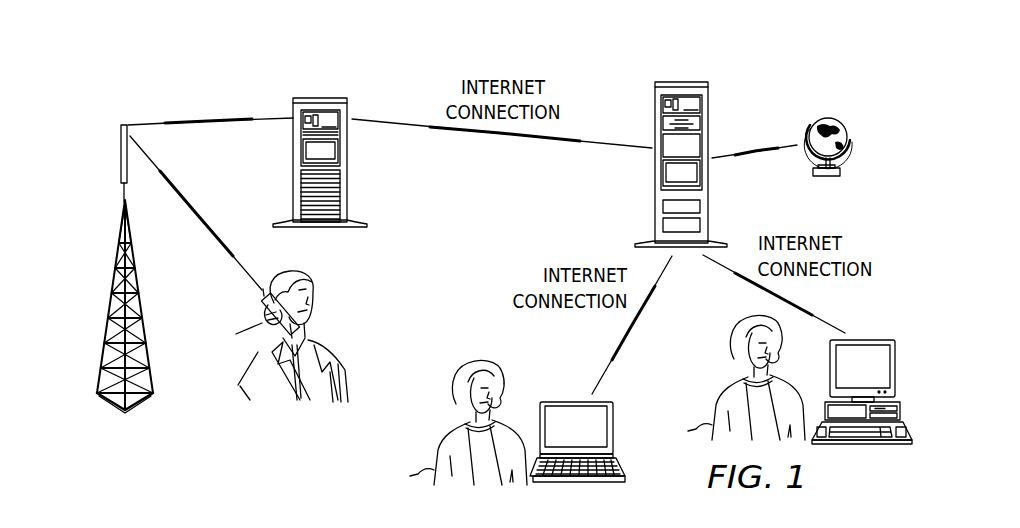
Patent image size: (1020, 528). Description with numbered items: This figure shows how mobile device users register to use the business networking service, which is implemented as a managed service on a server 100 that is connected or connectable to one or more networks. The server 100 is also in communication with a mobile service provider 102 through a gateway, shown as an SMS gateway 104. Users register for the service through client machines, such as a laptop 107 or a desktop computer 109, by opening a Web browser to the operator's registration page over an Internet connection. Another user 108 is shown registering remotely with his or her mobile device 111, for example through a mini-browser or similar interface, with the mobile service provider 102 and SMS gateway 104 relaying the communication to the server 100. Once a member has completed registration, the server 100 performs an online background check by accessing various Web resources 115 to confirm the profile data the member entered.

The server 100 is at (683, 82).
The mobile service provider 102 is at (140, 402).
The SMS gateway 104 is at (318, 98).
The laptop 107 is at (568, 402).
The user 108 is at (345, 374).
The desktop computer 109 is at (868, 340).
The mobile device 111 is at (318, 328).
The Web resources 115 is at (832, 119).